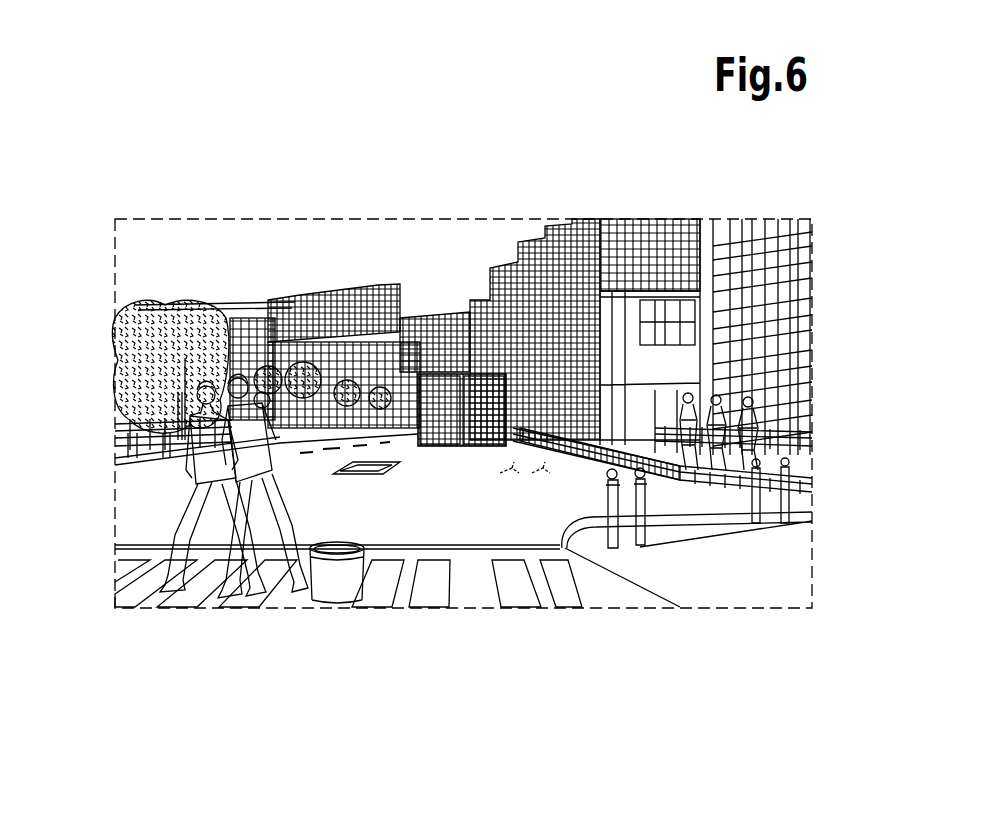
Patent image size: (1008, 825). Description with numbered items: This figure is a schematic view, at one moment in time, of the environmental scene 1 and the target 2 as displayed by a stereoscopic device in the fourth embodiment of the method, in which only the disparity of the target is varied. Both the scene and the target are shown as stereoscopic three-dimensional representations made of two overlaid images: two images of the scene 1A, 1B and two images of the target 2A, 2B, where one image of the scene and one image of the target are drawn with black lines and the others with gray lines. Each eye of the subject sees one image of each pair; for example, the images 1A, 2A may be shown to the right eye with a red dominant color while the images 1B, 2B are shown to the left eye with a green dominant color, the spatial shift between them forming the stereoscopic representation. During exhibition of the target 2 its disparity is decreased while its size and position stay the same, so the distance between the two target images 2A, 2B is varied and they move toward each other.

The environmental scene 1 is at (73, 662).
The image of the scene 1A is at (205, 300).
The image of the scene 1B is at (150, 300).
The target 2 is at (515, 497).
The image of the target 2A is at (517, 425).
The image of the target 2B is at (397, 412).